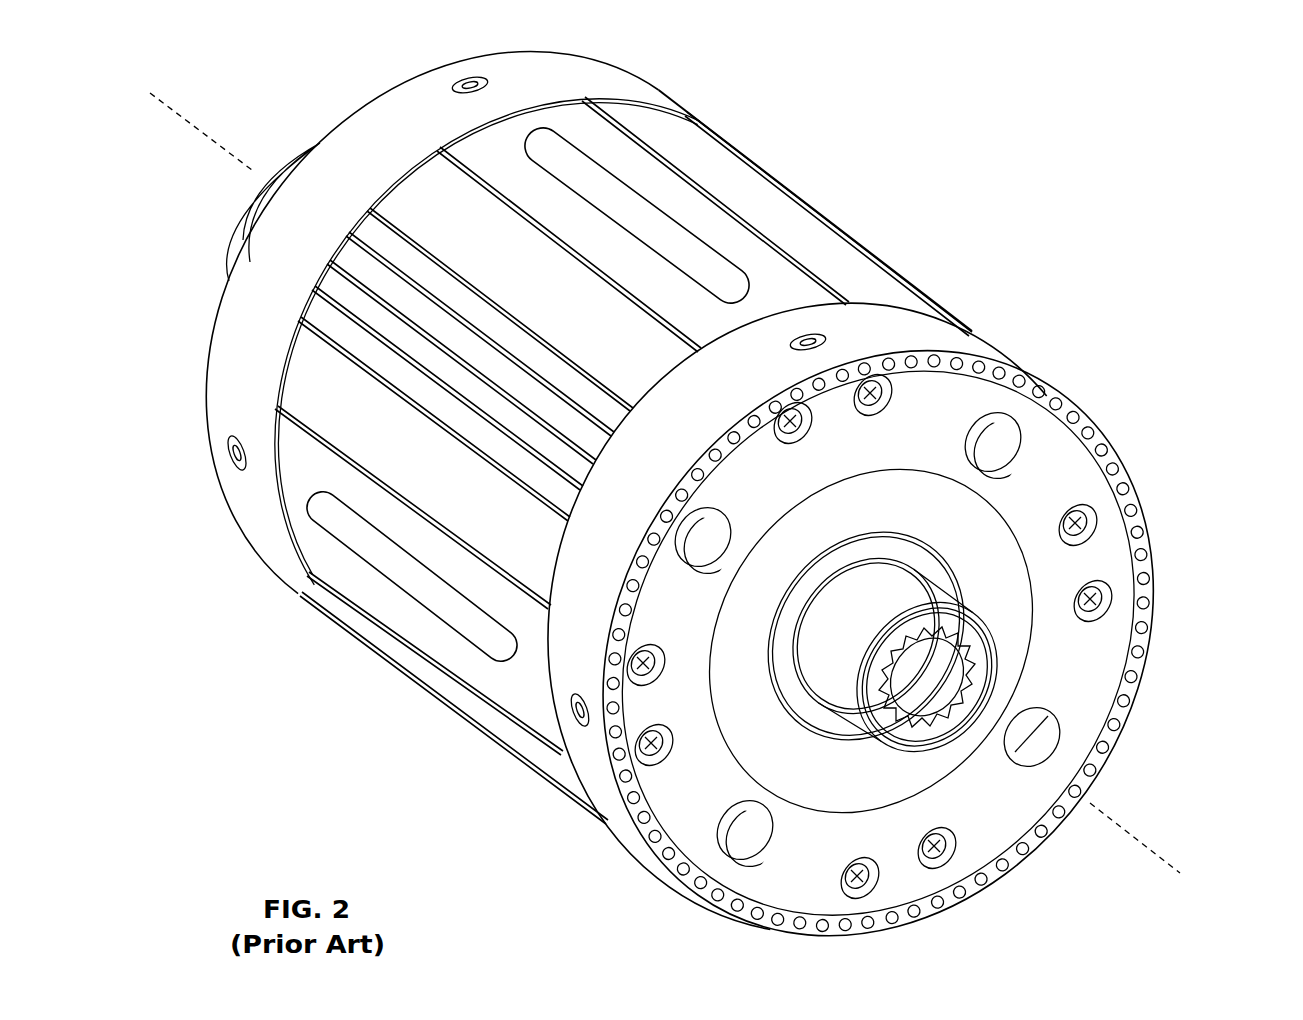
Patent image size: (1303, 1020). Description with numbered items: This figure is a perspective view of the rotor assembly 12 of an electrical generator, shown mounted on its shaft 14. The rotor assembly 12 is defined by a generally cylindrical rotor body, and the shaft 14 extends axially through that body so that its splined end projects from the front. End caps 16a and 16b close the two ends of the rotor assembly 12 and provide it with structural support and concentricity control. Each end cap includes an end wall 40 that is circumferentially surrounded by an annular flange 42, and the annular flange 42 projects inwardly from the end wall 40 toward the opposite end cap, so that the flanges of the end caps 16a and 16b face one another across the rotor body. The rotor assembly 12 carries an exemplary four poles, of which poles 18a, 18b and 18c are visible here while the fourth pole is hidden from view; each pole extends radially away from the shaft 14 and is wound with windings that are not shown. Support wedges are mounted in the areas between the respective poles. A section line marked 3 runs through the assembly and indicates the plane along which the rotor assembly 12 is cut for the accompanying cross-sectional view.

The section line 3- 3 is at (150, 93).
The rotor assembly 12 is at (931, 133).
The shaft 14 is at (1001, 669).
The end cap 16a is at (996, 349).
The end cap 16b is at (660, 82).
The pole 18a is at (455, 692).
The pole 18b is at (415, 215).
The pole 18c is at (820, 250).
The end wall 40 is at (1097, 680).
The annular flange 42 is at (682, 113).